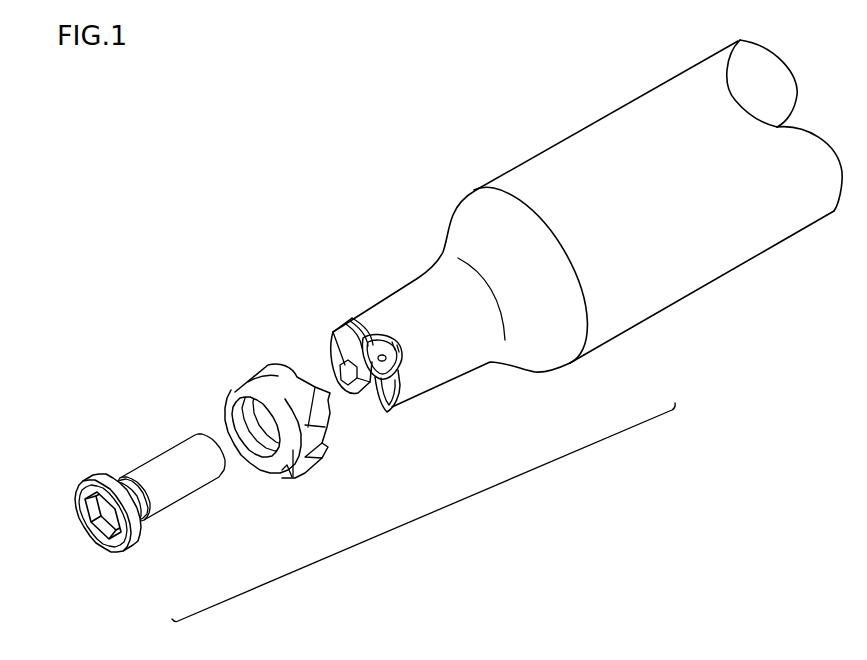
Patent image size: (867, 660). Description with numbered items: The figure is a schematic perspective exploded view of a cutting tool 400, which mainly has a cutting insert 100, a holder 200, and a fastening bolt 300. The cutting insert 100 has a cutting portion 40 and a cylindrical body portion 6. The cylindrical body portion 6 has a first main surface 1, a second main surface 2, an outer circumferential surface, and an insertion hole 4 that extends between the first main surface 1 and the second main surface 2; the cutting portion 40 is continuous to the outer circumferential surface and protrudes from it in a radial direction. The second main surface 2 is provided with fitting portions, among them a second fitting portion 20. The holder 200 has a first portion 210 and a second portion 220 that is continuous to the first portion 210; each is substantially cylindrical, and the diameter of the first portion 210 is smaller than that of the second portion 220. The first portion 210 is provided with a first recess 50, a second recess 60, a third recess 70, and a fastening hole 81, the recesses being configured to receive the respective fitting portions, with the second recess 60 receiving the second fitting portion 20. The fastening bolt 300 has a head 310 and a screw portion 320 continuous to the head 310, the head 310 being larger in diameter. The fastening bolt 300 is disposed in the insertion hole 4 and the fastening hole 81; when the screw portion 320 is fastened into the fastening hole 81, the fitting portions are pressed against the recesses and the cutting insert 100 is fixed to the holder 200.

The first main surface 1 is at (253, 460).
The second main surface 2 is at (290, 368).
The insertion hole 4 is at (233, 413).
The cylindrical body portion 6 is at (268, 373).
The second fitting portion 20 is at (320, 392).
The cutting portion 40 is at (317, 468).
The first recess 50 is at (370, 390).
The second recess 60 is at (408, 348).
The third recess 70 is at (347, 343).
The fastening hole 81 is at (382, 356).
The cutting insert 100 is at (294, 432).
The holder 200 is at (581, 243).
The first portion 210 is at (430, 333).
The second portion 220 is at (684, 267).
The fastening bolt 300 is at (150, 507).
The head 310 is at (109, 481).
The screw portion 320 is at (170, 463).
The cutting tool 400 is at (423, 512).